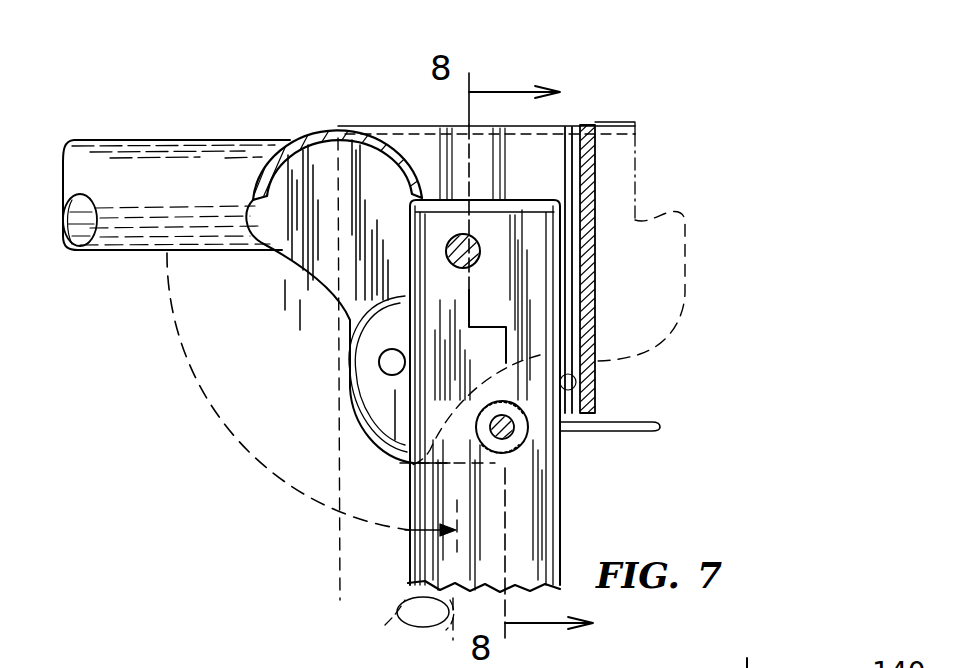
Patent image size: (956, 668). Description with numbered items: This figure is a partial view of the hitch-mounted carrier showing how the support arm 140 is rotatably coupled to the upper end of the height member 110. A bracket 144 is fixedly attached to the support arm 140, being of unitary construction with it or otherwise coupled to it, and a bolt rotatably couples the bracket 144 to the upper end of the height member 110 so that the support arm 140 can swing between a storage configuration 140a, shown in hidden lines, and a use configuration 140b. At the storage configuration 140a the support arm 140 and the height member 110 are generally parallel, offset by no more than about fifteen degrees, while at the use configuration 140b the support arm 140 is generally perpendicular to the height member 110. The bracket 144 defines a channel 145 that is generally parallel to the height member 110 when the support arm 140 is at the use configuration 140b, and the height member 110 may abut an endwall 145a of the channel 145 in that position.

The height member 110 is at (582, 506).
The support arm 140 is at (204, 124).
The storage configuration 140a is at (330, 552).
The use configuration 140b is at (115, 268).
The bracket 144 is at (620, 269).
The channel 145 is at (583, 110).
The endwall 145a is at (592, 173).